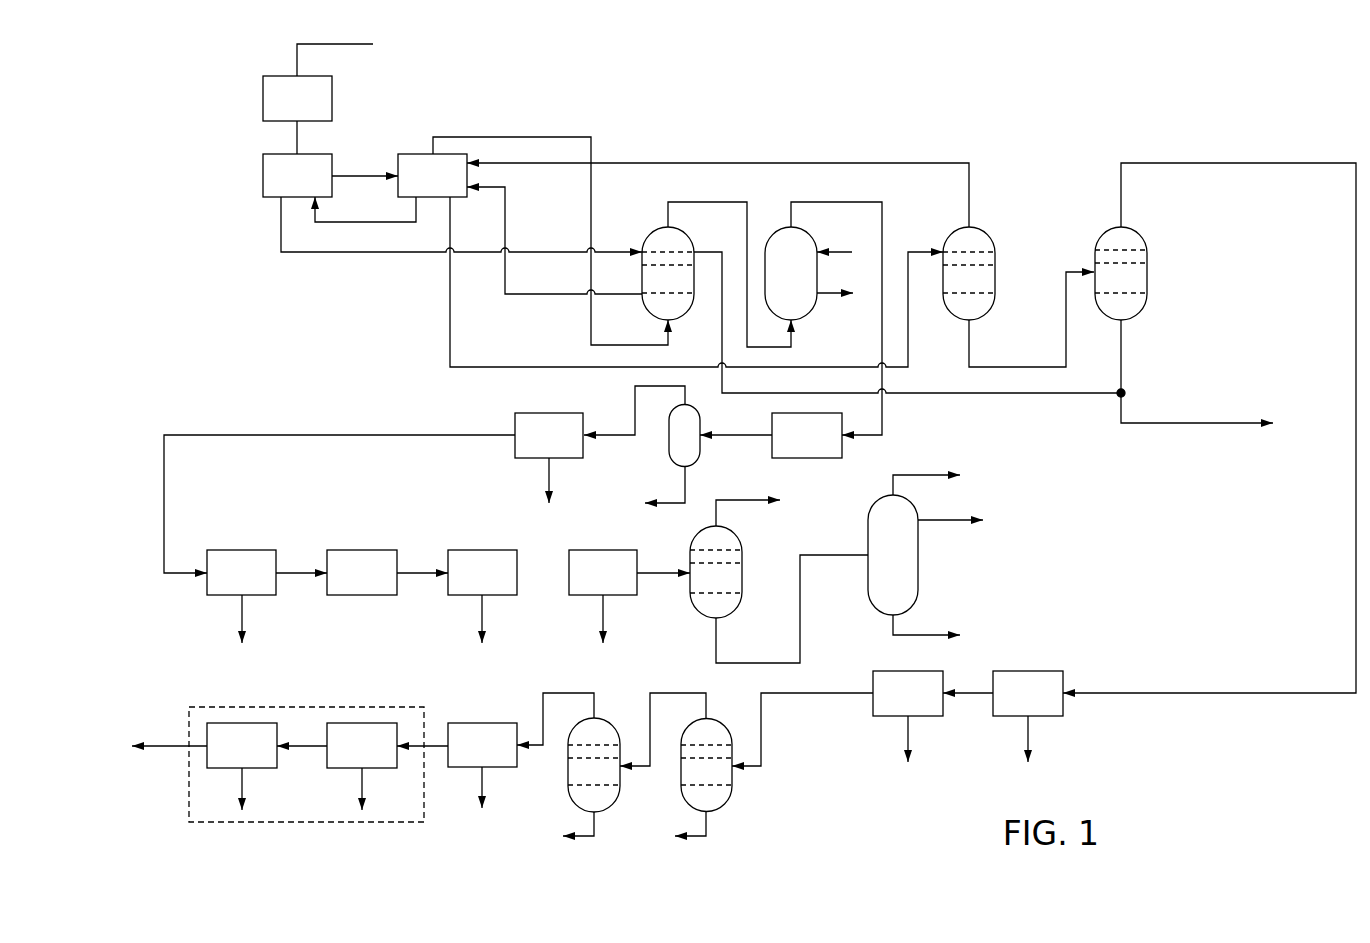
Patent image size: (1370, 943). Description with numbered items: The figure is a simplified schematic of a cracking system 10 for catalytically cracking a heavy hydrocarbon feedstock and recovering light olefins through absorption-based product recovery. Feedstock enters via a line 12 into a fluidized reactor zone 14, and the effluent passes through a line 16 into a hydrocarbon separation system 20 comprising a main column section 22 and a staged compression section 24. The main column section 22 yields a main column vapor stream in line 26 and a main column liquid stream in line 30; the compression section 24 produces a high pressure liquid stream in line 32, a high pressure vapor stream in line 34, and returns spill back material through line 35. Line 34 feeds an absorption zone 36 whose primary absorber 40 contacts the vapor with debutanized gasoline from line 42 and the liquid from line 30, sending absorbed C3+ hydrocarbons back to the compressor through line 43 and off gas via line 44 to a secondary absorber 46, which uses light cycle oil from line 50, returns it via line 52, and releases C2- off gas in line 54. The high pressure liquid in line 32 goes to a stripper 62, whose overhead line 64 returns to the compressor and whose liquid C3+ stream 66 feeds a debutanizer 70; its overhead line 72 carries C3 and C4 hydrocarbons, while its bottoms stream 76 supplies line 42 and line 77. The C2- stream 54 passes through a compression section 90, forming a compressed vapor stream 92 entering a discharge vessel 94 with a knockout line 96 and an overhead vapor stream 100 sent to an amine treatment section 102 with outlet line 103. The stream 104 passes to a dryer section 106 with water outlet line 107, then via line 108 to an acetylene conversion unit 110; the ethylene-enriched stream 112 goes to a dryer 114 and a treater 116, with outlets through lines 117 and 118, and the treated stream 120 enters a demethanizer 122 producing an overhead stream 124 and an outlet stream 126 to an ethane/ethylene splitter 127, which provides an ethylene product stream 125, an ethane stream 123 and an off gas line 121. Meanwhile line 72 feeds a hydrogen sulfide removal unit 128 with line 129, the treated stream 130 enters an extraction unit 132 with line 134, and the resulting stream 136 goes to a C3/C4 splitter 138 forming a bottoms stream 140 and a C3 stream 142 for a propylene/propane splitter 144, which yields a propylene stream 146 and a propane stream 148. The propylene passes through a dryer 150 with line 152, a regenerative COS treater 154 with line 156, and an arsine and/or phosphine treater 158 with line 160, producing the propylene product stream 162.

The cracking system 10 is at (1257, 74).
The line 12 is at (353, 44).
The fluidized reactor zone 14 is at (297, 98).
The line 16 is at (298, 141).
The hydrocarbon separation system 20 is at (318, 292).
The main column section 22 is at (297, 175).
The staged compression section 24 is at (432, 175).
The line 26 is at (374, 167).
The line 30 is at (280, 240).
The line 32 is at (450, 282).
The line 34 is at (591, 326).
The line 35 is at (393, 220).
The absorption zone 36 is at (690, 130).
The primary absorber 40 is at (668, 273).
The line 42 is at (957, 395).
The line 43 is at (505, 286).
The line 44 is at (683, 200).
The secondary absorber 46 is at (791, 273).
The line 50 is at (835, 250).
The line 52 is at (836, 292).
The line 54 is at (805, 200).
The stripper 62 is at (969, 273).
The overhead line 64 is at (782, 163).
The liquid C3+ stream 66 is at (1066, 348).
The debutanizer 70 is at (1121, 273).
The line 72 is at (1240, 163).
The bottoms stream 76 is at (1122, 355).
The line 77 is at (1196, 423).
The compression section 90 is at (807, 435).
The compressed vapor stream 92 is at (735, 437).
The discharge vessel 94 is at (684, 435).
The line 96 is at (685, 490).
The overhead vapor stream 100 is at (635, 399).
The amine treatment section 102 is at (549, 435).
The CO2/H2S outlet line 103 is at (549, 480).
The stream 104 is at (338, 435).
The dryer section 106 is at (241, 572).
The water outlet line 107 is at (242, 612).
The line 108 is at (302, 572).
The acetylene conversion unit 110 is at (362, 572).
The ethylene-enriched process stream 112 is at (422, 572).
The dryer 114 is at (482, 572).
The treater 116 is at (603, 572).
The line 117 is at (482, 612).
The line 118 is at (603, 612).
The treated stream 120 is at (663, 572).
The off gas line 121 is at (915, 475).
The demethanizer 122 is at (716, 572).
The ethane stream 123 is at (913, 636).
The overhead stream 124 is at (755, 498).
The ethylene product stream 125 is at (943, 522).
The demethanizer outlet stream 126 is at (802, 619).
The ethane/ethylene splitter 127 is at (893, 555).
The hydrogen sulfide removal treatment unit 128 is at (1028, 693).
The line 129 is at (1030, 731).
The treated stream 130 is at (972, 693).
The extraction unit 132 is at (908, 693).
The line 134 is at (910, 731).
The stream 136 is at (810, 694).
The C3/C4 splitter 138 is at (706, 765).
The bottoms stream 140 is at (707, 825).
The stream 142 is at (662, 693).
The propylene/propane splitter 144 is at (594, 765).
The propylene stream 146 is at (554, 693).
The propane stream 148 is at (595, 825).
The dryer 150 is at (482, 745).
The line 152 is at (484, 781).
The regenerative COS treater 154 is at (387, 745).
The line 156 is at (364, 781).
The arsine and/or phosphine treater 158 is at (267, 745).
The line 160 is at (244, 781).
The propylene product stream 162 is at (160, 746).